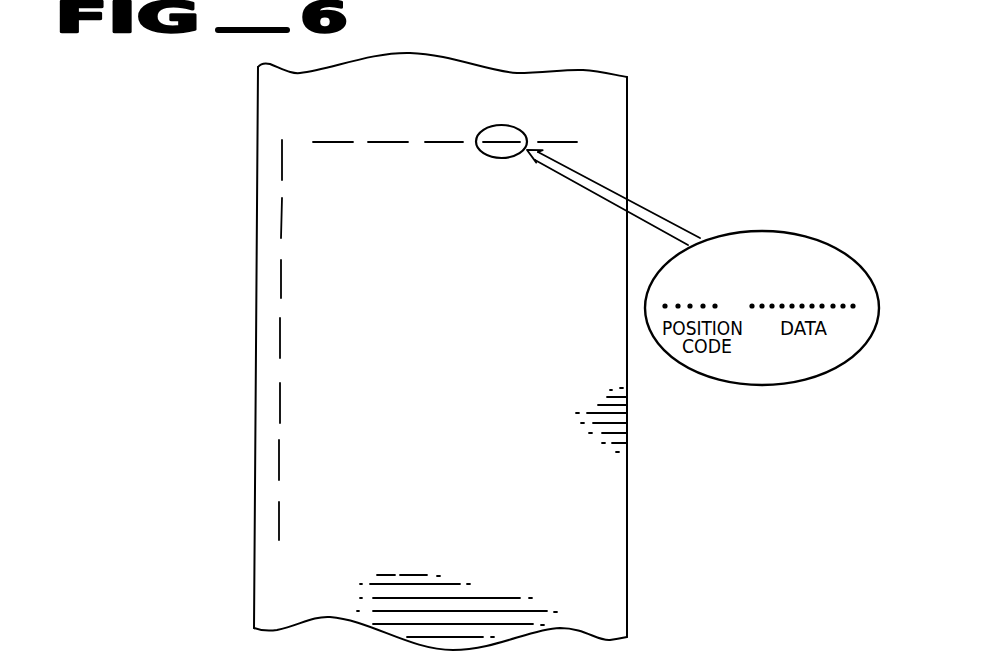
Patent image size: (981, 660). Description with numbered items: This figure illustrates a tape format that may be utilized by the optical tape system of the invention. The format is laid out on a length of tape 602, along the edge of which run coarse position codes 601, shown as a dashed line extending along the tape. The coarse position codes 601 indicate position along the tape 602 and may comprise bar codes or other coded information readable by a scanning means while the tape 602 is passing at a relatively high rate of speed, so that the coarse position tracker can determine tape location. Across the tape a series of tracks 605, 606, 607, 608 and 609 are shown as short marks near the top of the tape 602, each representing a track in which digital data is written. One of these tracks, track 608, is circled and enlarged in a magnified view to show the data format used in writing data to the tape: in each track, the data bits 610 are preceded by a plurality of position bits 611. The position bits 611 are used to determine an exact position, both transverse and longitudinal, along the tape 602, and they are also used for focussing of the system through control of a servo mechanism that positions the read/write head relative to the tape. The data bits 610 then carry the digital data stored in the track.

The coarse position codes 601 is at (277, 522).
The tape 602 is at (430, 560).
The track 605 is at (340, 139).
The track 606 is at (396, 139).
The track 607 is at (450, 139).
The track 608 is at (509, 139).
The track 609 is at (566, 139).
The data bits 610 is at (805, 293).
The position bits 611 is at (705, 294).